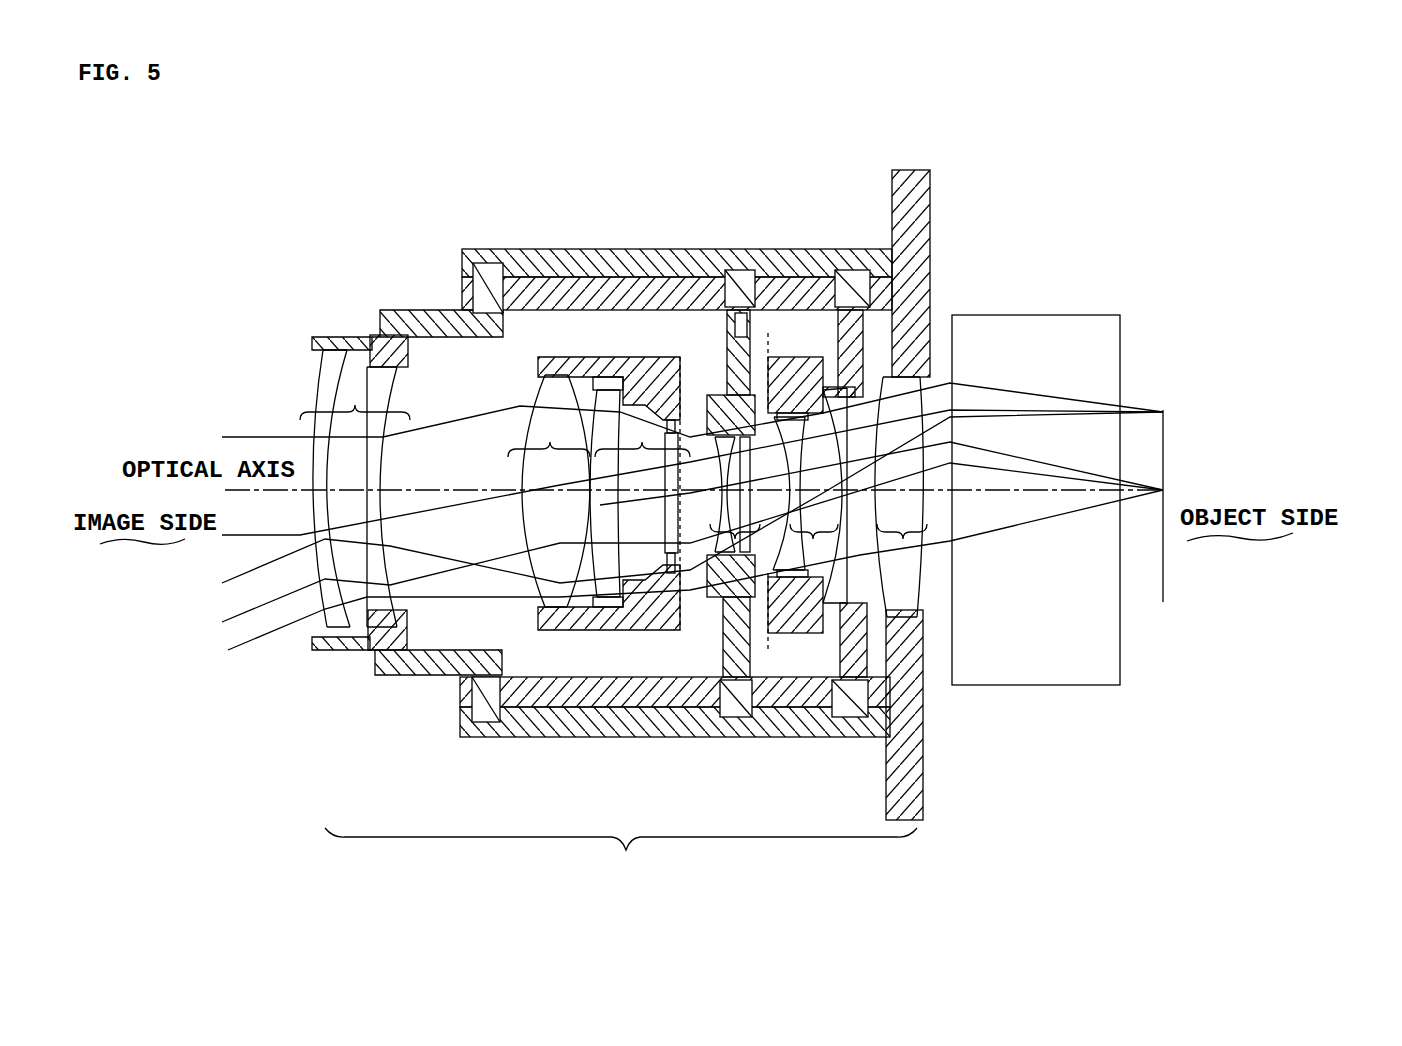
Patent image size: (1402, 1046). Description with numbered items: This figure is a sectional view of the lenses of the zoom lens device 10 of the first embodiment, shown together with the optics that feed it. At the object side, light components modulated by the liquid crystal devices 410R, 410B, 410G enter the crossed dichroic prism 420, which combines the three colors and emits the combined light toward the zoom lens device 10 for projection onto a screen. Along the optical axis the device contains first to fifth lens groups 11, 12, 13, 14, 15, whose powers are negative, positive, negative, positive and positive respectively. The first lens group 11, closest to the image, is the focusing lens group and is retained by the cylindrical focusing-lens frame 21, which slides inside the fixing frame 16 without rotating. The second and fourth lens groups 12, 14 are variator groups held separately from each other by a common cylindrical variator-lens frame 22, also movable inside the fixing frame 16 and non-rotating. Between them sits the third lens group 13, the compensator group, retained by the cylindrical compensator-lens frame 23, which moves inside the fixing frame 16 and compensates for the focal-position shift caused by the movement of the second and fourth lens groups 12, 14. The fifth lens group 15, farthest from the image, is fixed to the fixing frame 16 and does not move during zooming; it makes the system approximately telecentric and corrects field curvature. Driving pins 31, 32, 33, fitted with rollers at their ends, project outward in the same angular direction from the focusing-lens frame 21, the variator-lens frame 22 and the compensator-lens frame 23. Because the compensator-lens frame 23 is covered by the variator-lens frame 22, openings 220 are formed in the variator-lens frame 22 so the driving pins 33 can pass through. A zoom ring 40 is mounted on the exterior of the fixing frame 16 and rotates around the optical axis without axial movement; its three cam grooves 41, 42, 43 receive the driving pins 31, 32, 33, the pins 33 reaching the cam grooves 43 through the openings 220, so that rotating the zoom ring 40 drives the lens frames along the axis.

The zoom lens device 10 is at (621, 857).
The first lens group 11 is at (357, 408).
The second lens group 12 is at (568, 375).
The third lens group 13 is at (752, 532).
The fourth lens group 14 is at (850, 552).
The fifth lens group 15 is at (909, 560).
The fixing frame 16 is at (647, 372).
The focusing-lens frame 21 is at (437, 327).
The variator-lens frame 22 is at (648, 296).
The compensator-lens frame 23 is at (740, 272).
The driving pin 31 is at (433, 461).
The driving pin 32 is at (877, 428).
The driving pin 33 is at (764, 370).
The zoom ring 40 is at (768, 400).
The cam groove 41 is at (466, 278).
The cam groove 42 is at (820, 290).
The cam groove 43 is at (728, 335).
The opening 220 is at (757, 380).
The crossed dichroic prism 420 is at (1037, 342).
The liquid crystal device 410R is at (1265, 475).
The liquid crystal device 410B is at (1265, 475).
The liquid crystal device 410G is at (1172, 404).